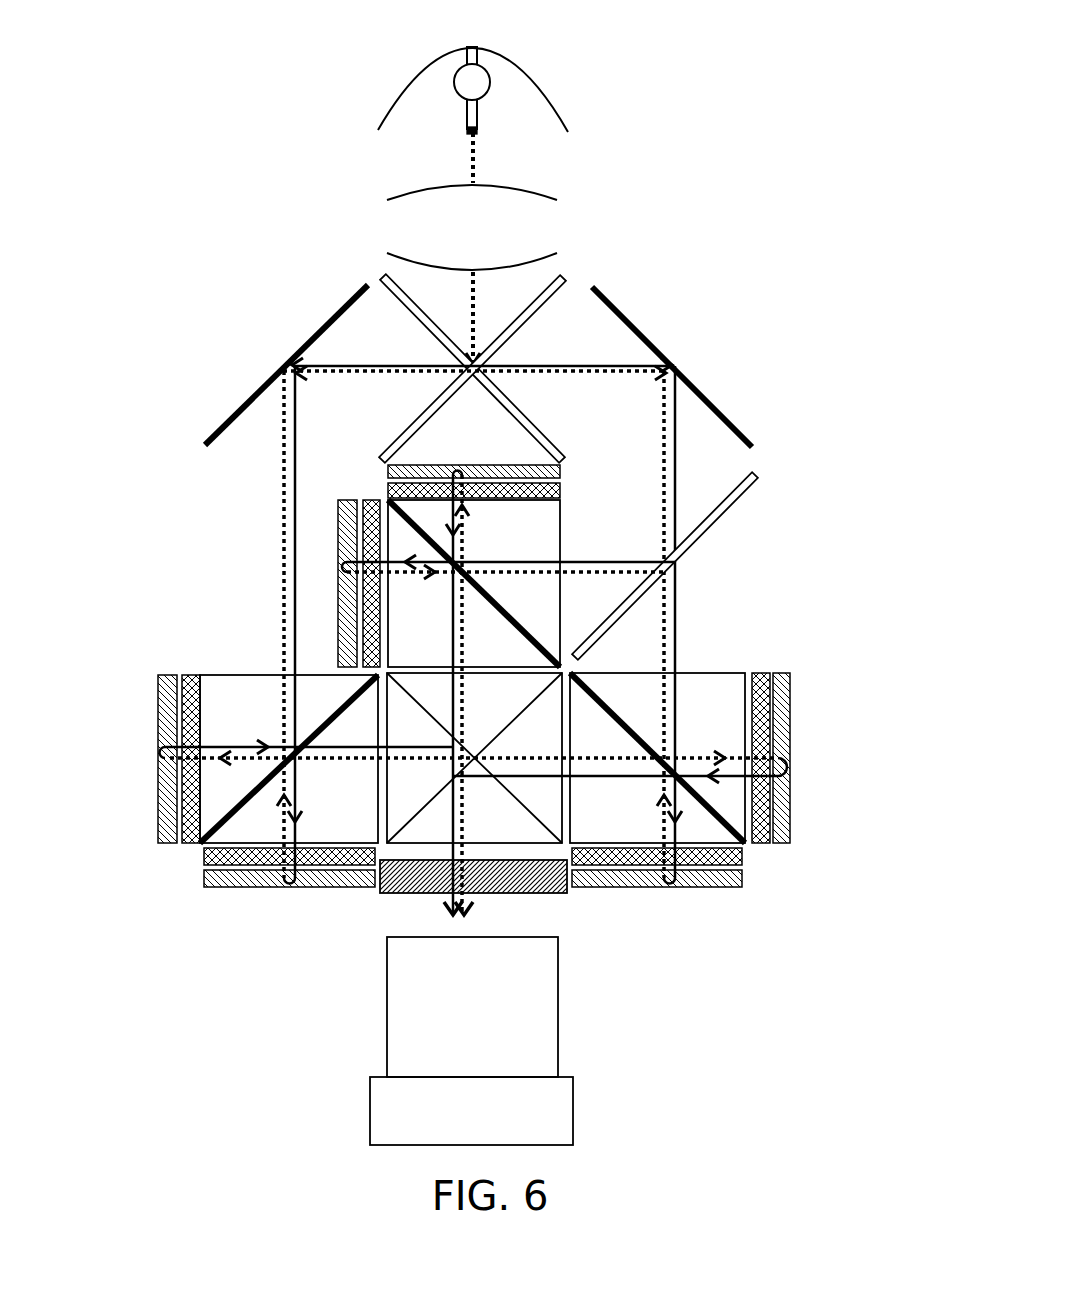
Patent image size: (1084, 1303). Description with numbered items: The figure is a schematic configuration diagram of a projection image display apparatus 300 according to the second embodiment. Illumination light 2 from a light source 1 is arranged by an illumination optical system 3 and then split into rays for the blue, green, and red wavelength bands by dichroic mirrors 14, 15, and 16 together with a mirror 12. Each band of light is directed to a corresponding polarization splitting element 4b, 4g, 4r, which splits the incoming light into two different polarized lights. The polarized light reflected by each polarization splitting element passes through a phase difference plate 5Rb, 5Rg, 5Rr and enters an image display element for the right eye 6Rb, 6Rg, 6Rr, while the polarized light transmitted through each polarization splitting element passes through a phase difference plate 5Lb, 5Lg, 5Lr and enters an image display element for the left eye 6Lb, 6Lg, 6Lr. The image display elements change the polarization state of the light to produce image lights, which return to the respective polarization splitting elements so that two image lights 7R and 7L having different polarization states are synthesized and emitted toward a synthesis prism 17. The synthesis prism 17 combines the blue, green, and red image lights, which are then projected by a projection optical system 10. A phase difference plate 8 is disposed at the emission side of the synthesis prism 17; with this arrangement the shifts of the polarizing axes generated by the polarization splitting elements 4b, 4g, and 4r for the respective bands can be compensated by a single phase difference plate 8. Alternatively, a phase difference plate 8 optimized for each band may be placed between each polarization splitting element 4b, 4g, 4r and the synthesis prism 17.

The projection image display apparatus 300 is at (740, 108).
The light source 1 is at (472, 78).
The illumination light 2 is at (468, 163).
The illumination optical system 3 is at (525, 225).
The mirror 12 is at (248, 398).
The dichroic mirror 14 is at (557, 296).
The dichroic mirror 15 is at (413, 300).
The dichroic mirror 16 is at (718, 517).
The polarization splitting element 4g is at (550, 537).
The polarization splitting element 4b is at (206, 852).
The polarization splitting element 4r is at (718, 688).
The phase difference plate 5Rg is at (385, 493).
The image display element for the right eye 6Rg is at (413, 473).
The phase difference plate 5Lg is at (362, 538).
The image display element for the left eye 6Lg is at (350, 595).
The phase difference plate 5Rb is at (190, 682).
The image display element for the right eye 6Rb is at (160, 690).
The phase difference plate 5Lb is at (227, 858).
The image display element for the left eye 6Lb is at (312, 880).
The phase difference plate 5Rr is at (760, 702).
The image display element for the right eye 6Rr is at (774, 753).
The phase difference plate 5Lr is at (690, 866).
The image display element for the left eye 6Lr is at (725, 886).
The synthesis prism 17 is at (547, 835).
The phase difference plate 8 is at (385, 892).
The image light 7R is at (450, 840).
The image light 7L is at (463, 826).
The projection optical system 10 is at (385, 1092).